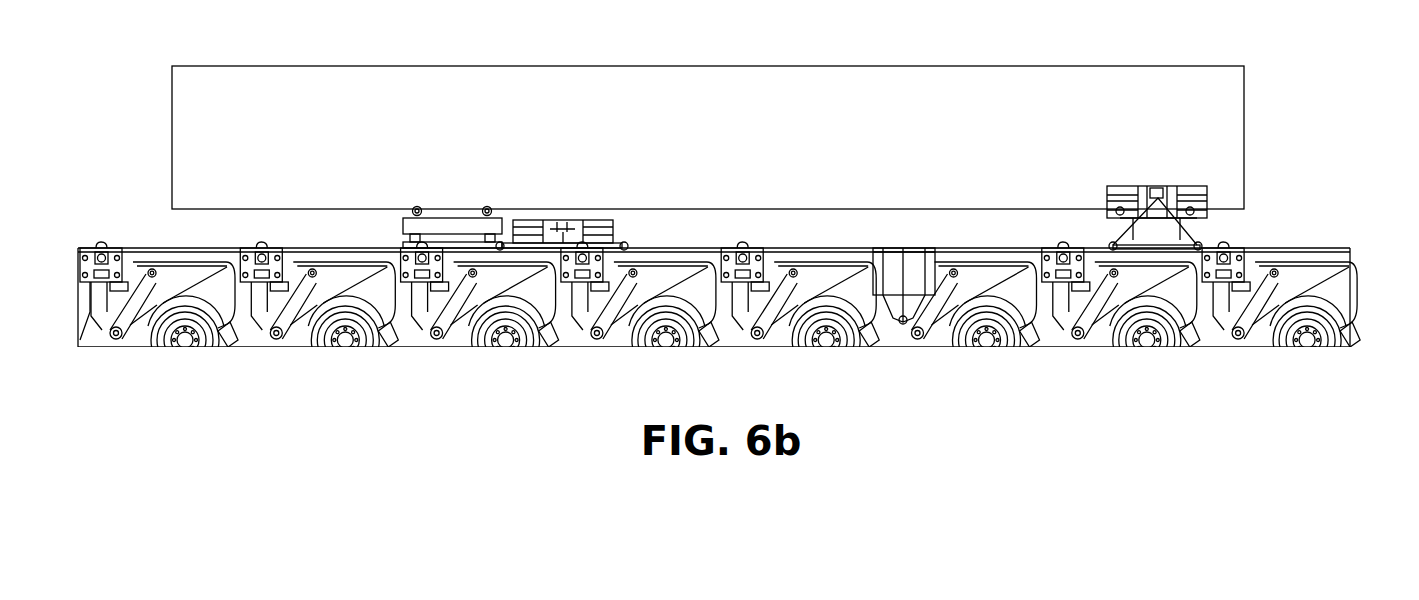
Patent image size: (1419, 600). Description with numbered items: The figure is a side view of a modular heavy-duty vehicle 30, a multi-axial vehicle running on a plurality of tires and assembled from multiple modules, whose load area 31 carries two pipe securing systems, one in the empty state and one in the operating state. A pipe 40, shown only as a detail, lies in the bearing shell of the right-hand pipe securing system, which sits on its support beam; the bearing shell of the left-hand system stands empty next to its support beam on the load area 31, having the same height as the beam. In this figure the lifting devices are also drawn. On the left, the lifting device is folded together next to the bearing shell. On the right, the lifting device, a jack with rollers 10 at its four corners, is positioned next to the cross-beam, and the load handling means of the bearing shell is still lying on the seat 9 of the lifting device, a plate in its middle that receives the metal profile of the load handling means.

The pipe 40 is at (1208, 90).
The modular heavy-duty vehicle 30 is at (719, 287).
The load area 31 is at (155, 250).
The seat 9 is at (1162, 192).
The rollers 10 is at (1203, 238).